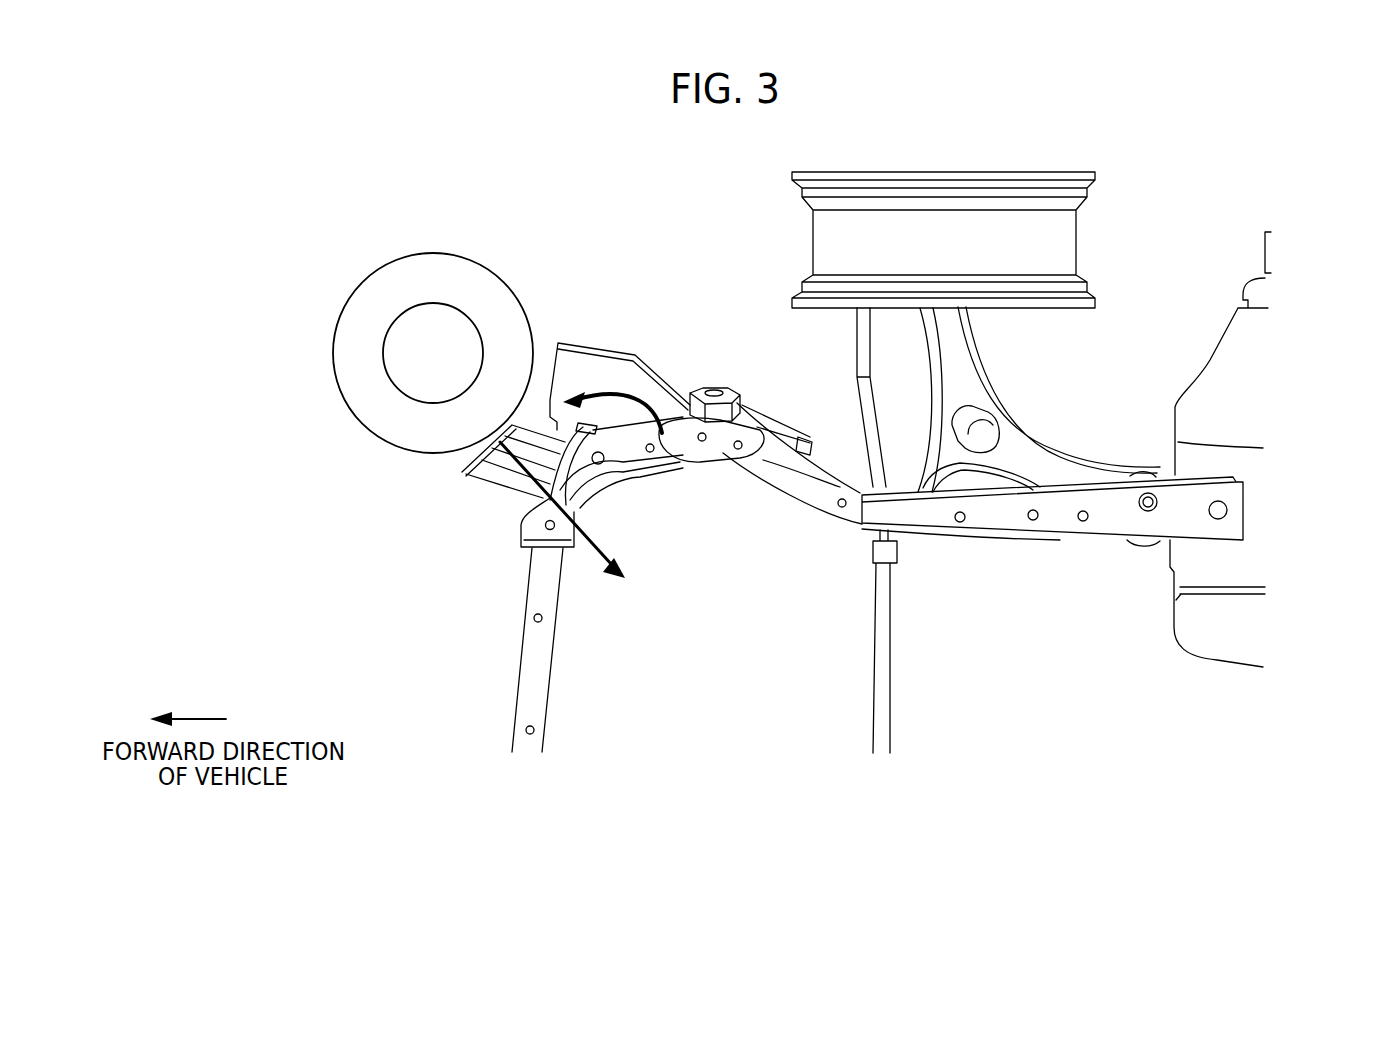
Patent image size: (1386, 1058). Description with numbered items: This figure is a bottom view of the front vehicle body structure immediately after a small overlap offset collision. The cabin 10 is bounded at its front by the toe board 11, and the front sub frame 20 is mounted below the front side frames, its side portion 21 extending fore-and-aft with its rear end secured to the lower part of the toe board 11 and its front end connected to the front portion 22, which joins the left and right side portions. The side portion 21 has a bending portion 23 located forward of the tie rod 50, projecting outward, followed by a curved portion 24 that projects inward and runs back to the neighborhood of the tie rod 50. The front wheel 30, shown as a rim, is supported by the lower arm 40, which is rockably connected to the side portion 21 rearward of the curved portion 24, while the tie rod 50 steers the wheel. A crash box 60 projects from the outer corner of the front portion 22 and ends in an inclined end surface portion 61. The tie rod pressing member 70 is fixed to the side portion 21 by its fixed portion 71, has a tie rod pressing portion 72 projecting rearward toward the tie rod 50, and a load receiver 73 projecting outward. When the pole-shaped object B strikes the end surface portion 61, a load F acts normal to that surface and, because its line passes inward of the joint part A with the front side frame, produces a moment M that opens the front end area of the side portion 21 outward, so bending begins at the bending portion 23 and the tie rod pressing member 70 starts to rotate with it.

The cabin 10 is at (1266, 449).
The toe board 11 is at (1192, 422).
The front sub frame 20 is at (458, 657).
The side portion 21 is at (1073, 540).
The front portion 22 is at (528, 617).
The bending portion 23 is at (712, 442).
The curved portion 24 is at (822, 500).
The front wheel 30 is at (1055, 236).
The lower arm 40 is at (975, 343).
The tie rod 50 is at (862, 430).
The crash box 60 is at (510, 490).
The end surface portion 61 is at (470, 470).
The tie rod pressing member 70 is at (549, 320).
The fixed portion 71 is at (686, 386).
The tie rod pressing portion 72 is at (802, 425).
The load receiver 73 is at (577, 362).
The joint part A is at (608, 457).
The object B is at (394, 275).
The moment M is at (612, 398).
The load F is at (562, 525).